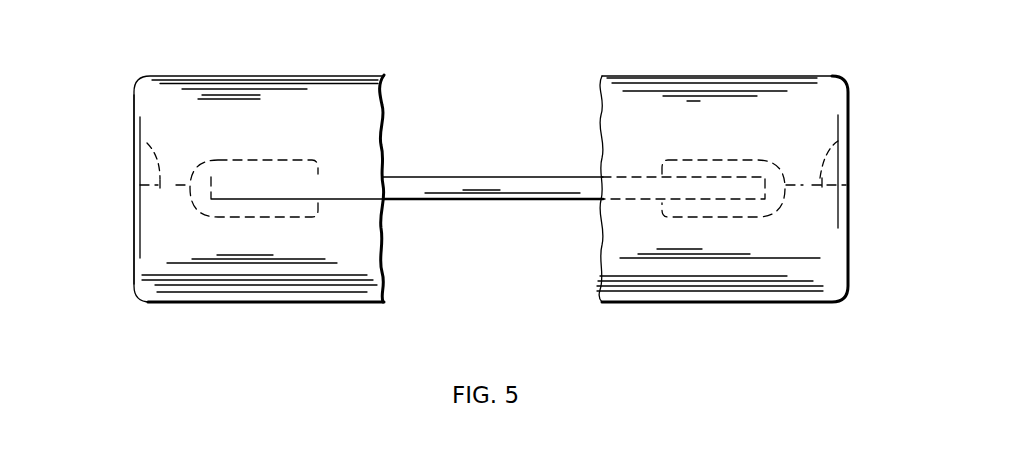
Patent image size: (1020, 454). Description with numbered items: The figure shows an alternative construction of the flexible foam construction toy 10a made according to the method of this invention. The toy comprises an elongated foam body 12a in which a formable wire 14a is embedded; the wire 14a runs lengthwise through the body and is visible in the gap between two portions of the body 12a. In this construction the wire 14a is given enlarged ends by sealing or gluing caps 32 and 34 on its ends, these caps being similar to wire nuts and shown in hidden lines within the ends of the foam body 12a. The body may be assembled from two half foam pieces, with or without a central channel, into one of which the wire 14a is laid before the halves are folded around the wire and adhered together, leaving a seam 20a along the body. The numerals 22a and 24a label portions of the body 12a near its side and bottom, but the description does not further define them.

The flexible foam construction toy 10a is at (131, 58).
The foam body 12a is at (321, 301).
The wire 14a is at (483, 177).
The seam 20a is at (146, 139).
The side wall 22a is at (134, 222).
The bottom wall 24a is at (140, 296).
The cap 32 is at (235, 160).
The cap 34 is at (727, 160).